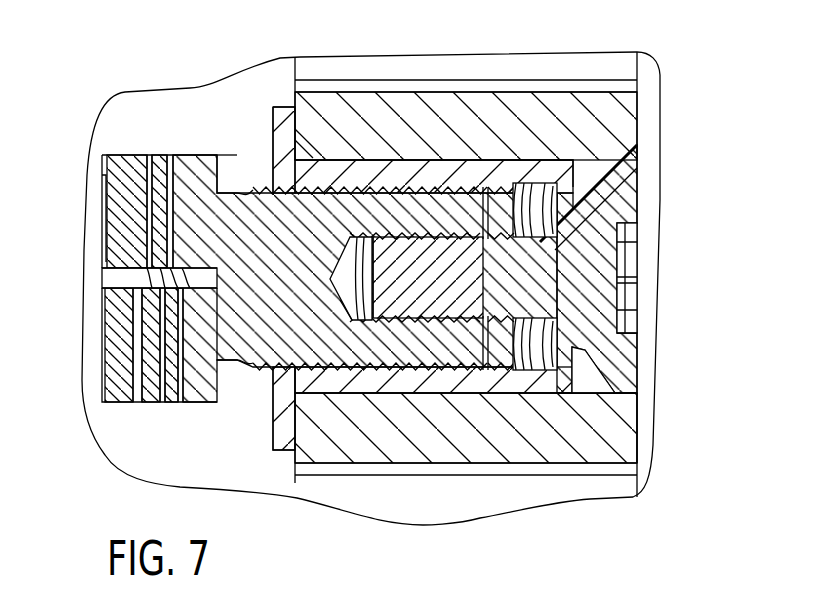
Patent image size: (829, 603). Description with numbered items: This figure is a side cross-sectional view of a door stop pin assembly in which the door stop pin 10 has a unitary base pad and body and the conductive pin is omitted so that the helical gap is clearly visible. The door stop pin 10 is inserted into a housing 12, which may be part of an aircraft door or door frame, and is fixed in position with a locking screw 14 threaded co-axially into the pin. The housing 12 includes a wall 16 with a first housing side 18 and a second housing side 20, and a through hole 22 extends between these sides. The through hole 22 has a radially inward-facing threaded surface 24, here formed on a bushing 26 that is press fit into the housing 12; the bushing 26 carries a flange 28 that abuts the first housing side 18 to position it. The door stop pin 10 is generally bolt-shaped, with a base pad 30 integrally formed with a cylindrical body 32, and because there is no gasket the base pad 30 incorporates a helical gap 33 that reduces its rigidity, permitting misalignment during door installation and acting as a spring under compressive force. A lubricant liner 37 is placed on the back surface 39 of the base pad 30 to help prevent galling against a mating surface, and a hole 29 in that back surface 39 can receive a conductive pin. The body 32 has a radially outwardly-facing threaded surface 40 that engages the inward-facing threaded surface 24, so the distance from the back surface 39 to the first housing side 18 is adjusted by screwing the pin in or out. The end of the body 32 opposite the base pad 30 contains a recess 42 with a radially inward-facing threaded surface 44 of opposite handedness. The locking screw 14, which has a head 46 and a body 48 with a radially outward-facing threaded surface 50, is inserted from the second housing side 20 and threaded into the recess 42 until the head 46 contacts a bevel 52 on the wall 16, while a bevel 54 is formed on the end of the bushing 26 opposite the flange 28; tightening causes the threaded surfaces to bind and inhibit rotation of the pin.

The door stop pin 10 is at (163, 433).
The housing 12 is at (447, 443).
The locking screw 14 is at (603, 196).
The wall 16 is at (530, 457).
The first housing side 18 is at (293, 487).
The second housing side 20 is at (637, 438).
The through hole 22 is at (570, 352).
The radially inward-facing threaded surface 24 is at (557, 358).
The bushing 26 is at (353, 390).
The flange 28 is at (280, 427).
The hole 29 is at (117, 283).
The base pad 30 is at (137, 240).
The body 32 is at (410, 203).
The helical gap 33 is at (130, 347).
The lubricant liner 37 is at (104, 182).
The back surface 39 is at (105, 213).
The radially outwardly-facing threaded surface 40 is at (265, 187).
The recess 42 is at (337, 263).
The radially inward-facing threaded surface 44 is at (353, 320).
The head 46 is at (637, 372).
The body 48 is at (431, 290).
The radially outward-facing threaded surface 50 is at (487, 325).
The bevel 52 is at (637, 393).
The bevel 54 is at (565, 378).